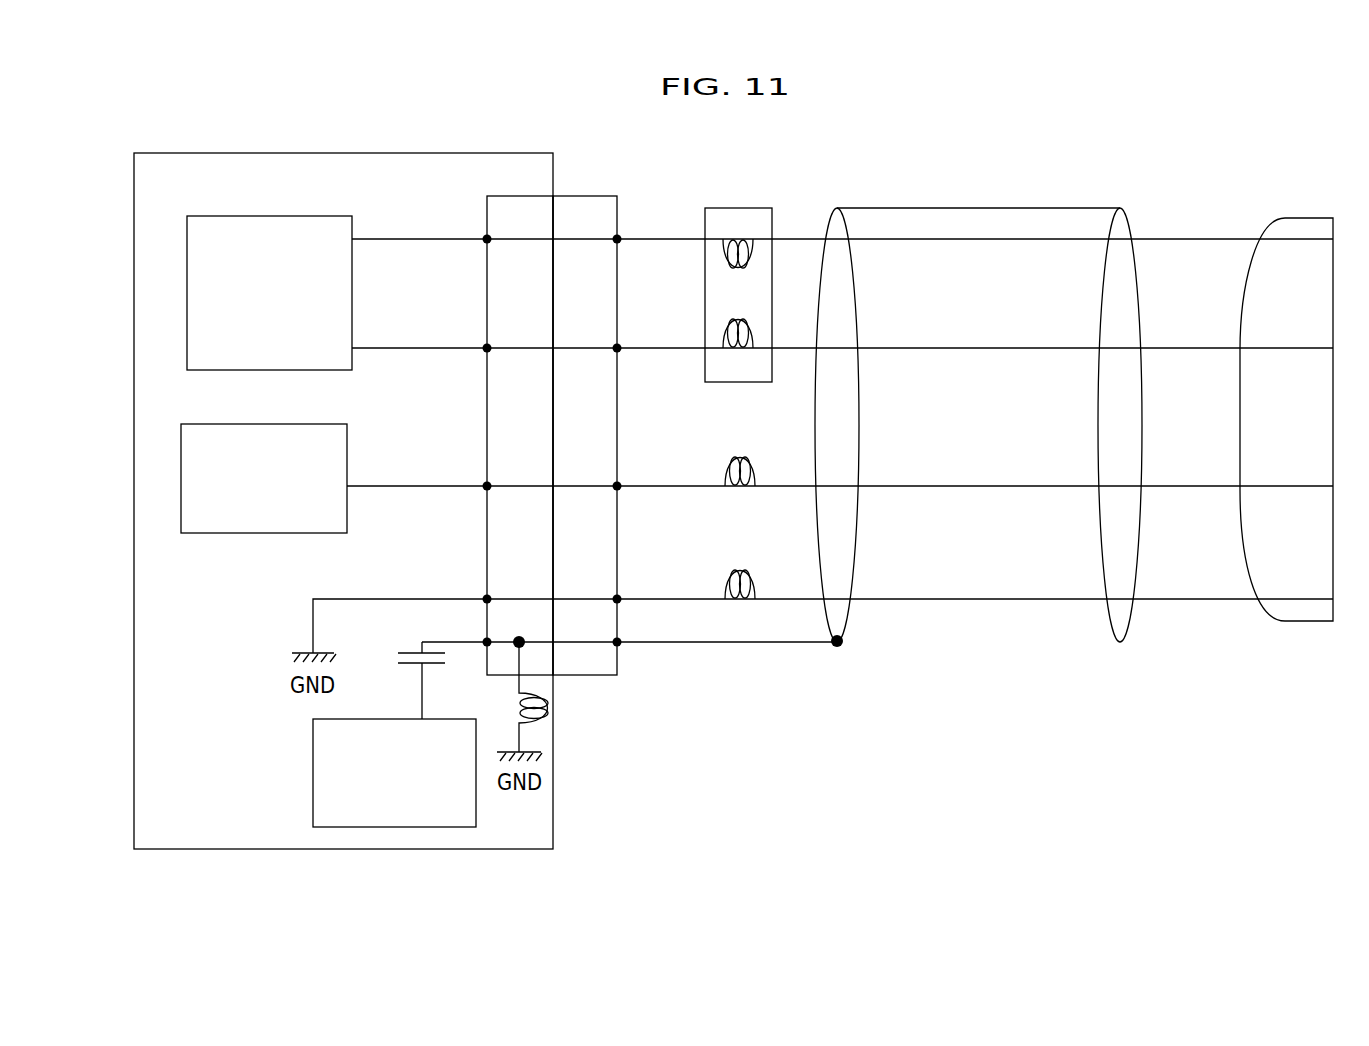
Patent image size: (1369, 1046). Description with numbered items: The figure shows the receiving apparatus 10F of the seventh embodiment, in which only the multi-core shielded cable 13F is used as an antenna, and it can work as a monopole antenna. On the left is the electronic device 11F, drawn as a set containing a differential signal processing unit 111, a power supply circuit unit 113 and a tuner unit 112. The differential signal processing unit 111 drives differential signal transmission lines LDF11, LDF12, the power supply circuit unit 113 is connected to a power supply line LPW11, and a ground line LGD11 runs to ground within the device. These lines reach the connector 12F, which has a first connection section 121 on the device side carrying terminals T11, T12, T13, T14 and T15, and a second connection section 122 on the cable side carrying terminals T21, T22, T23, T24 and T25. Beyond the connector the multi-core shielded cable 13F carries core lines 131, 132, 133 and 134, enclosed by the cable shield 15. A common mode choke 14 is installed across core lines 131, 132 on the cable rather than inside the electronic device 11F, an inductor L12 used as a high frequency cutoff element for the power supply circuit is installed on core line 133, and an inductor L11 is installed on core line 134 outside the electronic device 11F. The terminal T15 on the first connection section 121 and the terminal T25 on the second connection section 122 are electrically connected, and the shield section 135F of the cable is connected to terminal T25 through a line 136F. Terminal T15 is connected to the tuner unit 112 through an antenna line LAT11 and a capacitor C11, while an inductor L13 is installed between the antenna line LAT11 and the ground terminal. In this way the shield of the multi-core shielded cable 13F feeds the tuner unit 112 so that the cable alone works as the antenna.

The receiving apparatus 10F is at (1012, 807).
The electronic device 11F is at (553, 775).
The differential signal processing unit 111 is at (285, 216).
The tuner unit 112 is at (313, 773).
The power supply circuit unit 113 is at (262, 533).
The connector 12F is at (561, 400).
The first connection section 121 is at (514, 196).
The second connection section 122 is at (589, 184).
The multi-core shielded cable 13F is at (971, 204).
The core line 131 is at (980, 241).
The core line 132 is at (980, 350).
The core line 133 is at (980, 488).
The core line 134 is at (980, 601).
The shield section 135F is at (837, 648).
The line 136F is at (706, 644).
The common mode choke 14 is at (738, 208).
The cable shield 15 is at (1300, 622).
The terminal T11 is at (488, 236).
The terminal T12 is at (489, 345).
The terminal T13 is at (489, 484).
The terminal T14 is at (489, 597).
The terminal T15 is at (489, 640).
The terminal T21 is at (614, 243).
The terminal T22 is at (614, 352).
The terminal T23 is at (614, 490).
The terminal T24 is at (618, 597).
The terminal T25 is at (618, 640).
The differential signal transmission line LDF11 is at (425, 240).
The differential signal transmission line LDF12 is at (424, 347).
The power supply line LPW11 is at (424, 485).
The ground line LGD11 is at (404, 597).
The antenna line LAT11 is at (440, 641).
The capacitor C11 is at (397, 660).
The inductor L11 is at (740, 570).
The inductor L12 is at (740, 457).
The inductor L13 is at (550, 708).